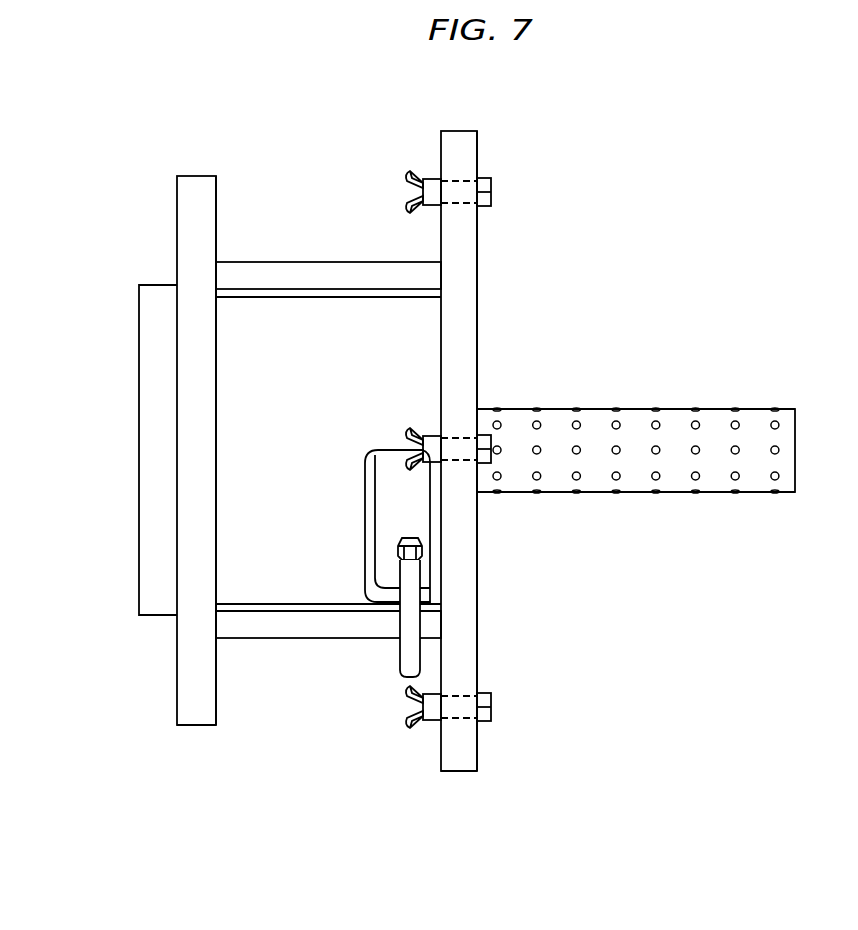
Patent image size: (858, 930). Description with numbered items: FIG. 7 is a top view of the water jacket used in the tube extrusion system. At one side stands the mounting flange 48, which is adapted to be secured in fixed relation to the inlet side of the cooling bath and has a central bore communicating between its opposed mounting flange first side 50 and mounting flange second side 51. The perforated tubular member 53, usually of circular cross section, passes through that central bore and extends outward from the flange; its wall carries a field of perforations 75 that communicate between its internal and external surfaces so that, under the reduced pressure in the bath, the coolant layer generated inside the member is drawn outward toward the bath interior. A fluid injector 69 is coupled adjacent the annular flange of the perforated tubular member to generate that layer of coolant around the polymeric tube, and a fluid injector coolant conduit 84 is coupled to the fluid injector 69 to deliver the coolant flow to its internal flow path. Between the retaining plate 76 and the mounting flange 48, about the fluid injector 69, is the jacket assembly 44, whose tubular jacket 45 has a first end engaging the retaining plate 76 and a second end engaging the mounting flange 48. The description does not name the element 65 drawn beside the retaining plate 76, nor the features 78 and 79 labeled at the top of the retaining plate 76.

The jacket assembly 44 is at (482, 93).
The tubular jacket 45 is at (370, 467).
The mounting flange 48 is at (460, 755).
The mounting flange first side 50 is at (441, 150).
The mounting flange second side 51 is at (478, 147).
The perforated tubular member 53 is at (753, 425).
The wall panel 65 is at (152, 350).
The fluid injector 69 is at (405, 518).
The perforations 75 is at (583, 425).
The retaining plate 76 is at (200, 708).
The front surface of plate 78 is at (177, 190).
The rear surface of plate 79 is at (216, 195).
The fluid injector coolant conduit 84 is at (408, 652).